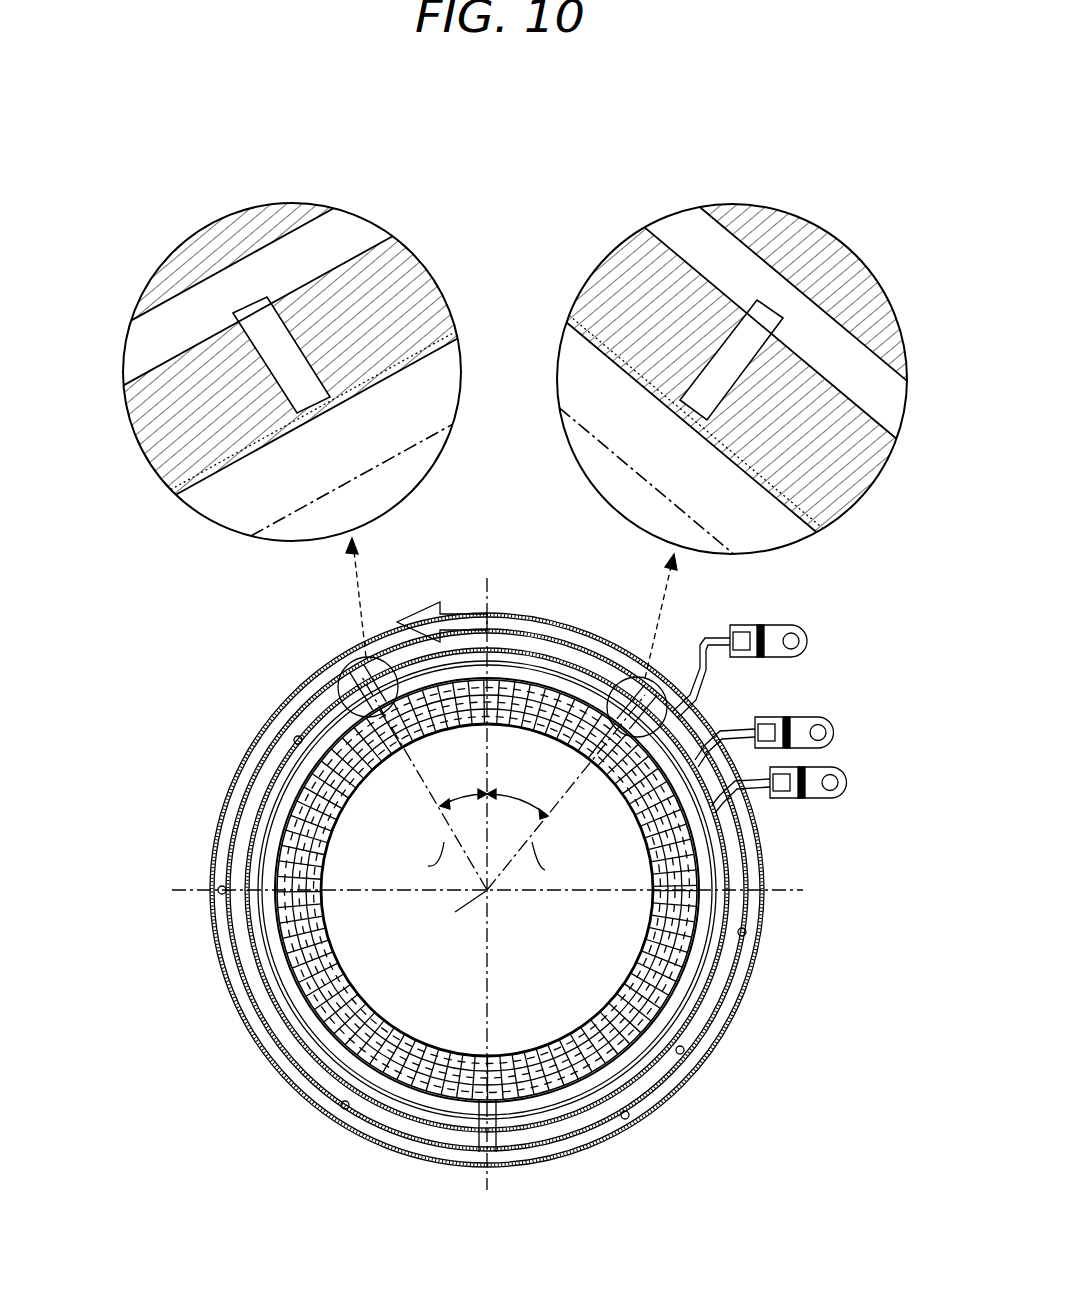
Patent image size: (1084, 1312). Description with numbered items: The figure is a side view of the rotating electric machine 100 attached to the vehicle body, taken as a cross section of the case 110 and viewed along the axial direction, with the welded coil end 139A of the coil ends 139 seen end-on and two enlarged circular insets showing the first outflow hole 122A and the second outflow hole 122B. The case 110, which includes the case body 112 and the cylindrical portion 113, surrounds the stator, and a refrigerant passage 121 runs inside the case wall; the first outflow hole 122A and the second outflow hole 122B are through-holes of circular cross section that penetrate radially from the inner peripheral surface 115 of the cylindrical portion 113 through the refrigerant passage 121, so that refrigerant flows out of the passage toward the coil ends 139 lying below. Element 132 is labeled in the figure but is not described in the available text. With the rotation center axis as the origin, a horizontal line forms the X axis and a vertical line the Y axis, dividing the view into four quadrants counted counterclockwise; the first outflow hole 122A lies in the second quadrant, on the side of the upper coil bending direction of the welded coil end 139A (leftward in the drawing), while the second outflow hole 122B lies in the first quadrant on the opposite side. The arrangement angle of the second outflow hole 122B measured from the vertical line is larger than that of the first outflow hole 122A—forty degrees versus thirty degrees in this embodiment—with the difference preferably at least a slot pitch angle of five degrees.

The rotating electric machine 100 is at (676, 1154).
The case 110 is at (221, 210).
The case body 112 is at (517, 326).
The cylindrical portion 113 is at (517, 326).
The inner peripheral surface 115 is at (200, 492).
The refrigerant passage 121 is at (360, 250).
The first outflow hole 122A is at (262, 316).
The second outflow hole 122B is at (770, 338).
The inner edge 132 is at (443, 360).
The coil end 139 is at (255, 535).
The welded coil end 139A is at (392, 890).